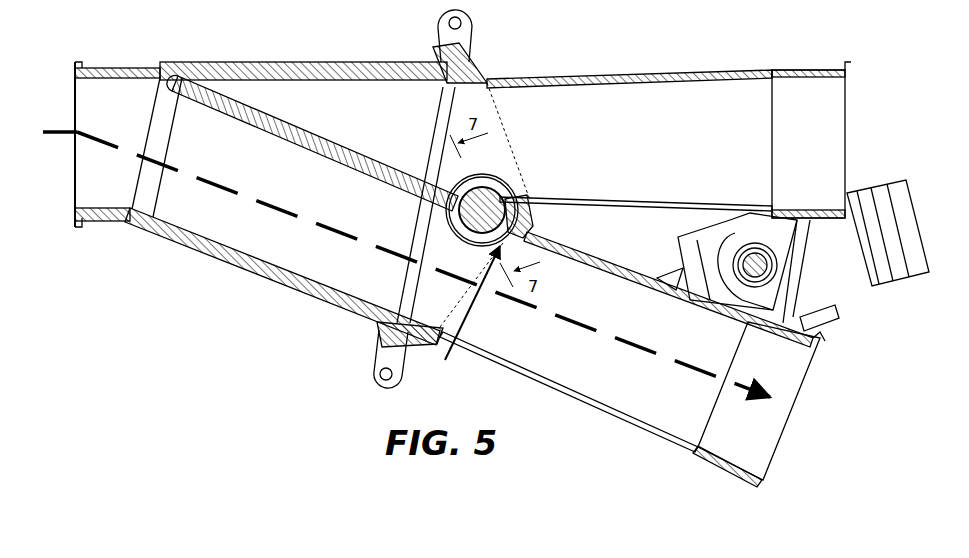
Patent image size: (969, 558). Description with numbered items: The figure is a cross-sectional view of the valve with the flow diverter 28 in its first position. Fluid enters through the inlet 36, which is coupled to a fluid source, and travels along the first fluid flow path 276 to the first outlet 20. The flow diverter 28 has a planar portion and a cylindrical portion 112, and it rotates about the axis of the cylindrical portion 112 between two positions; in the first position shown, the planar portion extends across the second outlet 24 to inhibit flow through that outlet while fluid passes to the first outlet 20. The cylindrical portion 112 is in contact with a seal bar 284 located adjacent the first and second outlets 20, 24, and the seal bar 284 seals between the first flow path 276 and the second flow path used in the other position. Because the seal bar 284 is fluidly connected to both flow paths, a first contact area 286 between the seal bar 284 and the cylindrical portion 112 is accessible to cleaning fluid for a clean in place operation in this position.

The first outlet 20 is at (798, 446).
The second outlet 24 is at (859, 106).
The flow diverter 28 is at (298, 92).
The inlet 36 is at (58, 86).
The cylindrical portion 112 is at (482, 203).
The first fluid flow path 276 is at (60, 133).
The seal bar 284 is at (515, 212).
The first contact area 286 is at (462, 315).